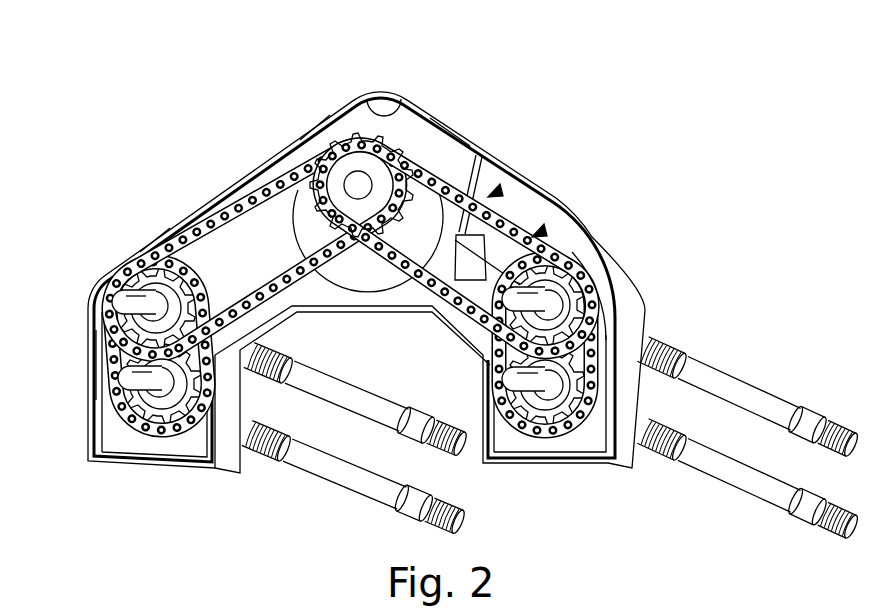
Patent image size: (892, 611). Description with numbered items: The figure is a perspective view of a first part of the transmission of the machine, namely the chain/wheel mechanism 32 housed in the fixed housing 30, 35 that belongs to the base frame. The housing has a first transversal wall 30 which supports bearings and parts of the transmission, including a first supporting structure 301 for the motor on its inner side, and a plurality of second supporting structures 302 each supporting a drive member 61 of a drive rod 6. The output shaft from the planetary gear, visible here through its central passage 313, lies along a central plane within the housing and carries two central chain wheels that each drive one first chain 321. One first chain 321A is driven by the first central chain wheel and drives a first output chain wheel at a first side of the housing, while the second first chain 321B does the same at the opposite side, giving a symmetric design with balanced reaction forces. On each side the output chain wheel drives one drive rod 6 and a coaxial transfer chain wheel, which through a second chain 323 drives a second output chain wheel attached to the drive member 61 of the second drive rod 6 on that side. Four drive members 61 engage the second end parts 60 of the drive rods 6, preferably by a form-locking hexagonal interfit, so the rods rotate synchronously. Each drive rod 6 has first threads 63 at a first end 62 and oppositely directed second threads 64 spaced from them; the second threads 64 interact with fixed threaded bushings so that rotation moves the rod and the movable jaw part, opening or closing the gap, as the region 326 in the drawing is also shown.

The drive rod 6 is at (350, 398).
The first transversal wall 30 is at (520, 213).
The chain/wheel mechanism 32 is at (525, 165).
The fixed housing 35 is at (447, 123).
The second end part 60 is at (118, 288).
The drive member 61 is at (605, 275).
The first end 62 is at (457, 447).
The first threads 63 is at (448, 427).
The second threads 64 is at (287, 358).
The first supporting structure 301 is at (463, 163).
The second supporting structure 302 is at (593, 373).
The central passage 313 is at (313, 130).
The first chain 321 is at (548, 250).
The first chain 321A is at (243, 193).
The second first chain 321B is at (572, 262).
The second chain 323 is at (552, 303).
The side wall 326 is at (150, 240).